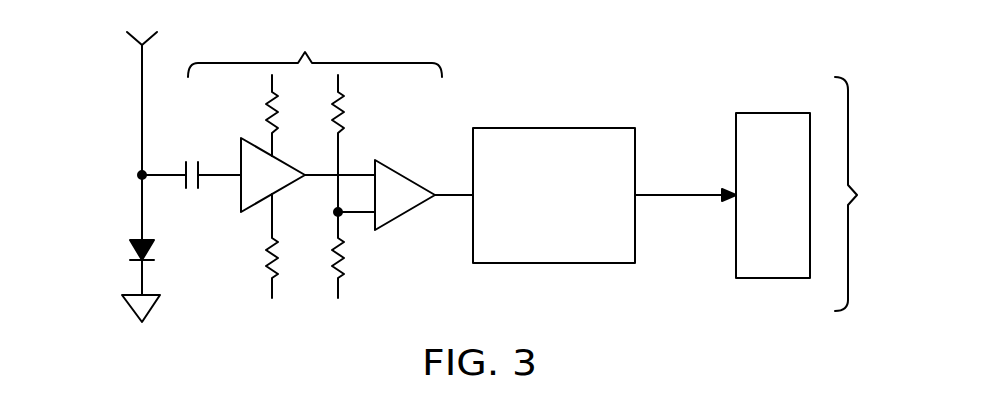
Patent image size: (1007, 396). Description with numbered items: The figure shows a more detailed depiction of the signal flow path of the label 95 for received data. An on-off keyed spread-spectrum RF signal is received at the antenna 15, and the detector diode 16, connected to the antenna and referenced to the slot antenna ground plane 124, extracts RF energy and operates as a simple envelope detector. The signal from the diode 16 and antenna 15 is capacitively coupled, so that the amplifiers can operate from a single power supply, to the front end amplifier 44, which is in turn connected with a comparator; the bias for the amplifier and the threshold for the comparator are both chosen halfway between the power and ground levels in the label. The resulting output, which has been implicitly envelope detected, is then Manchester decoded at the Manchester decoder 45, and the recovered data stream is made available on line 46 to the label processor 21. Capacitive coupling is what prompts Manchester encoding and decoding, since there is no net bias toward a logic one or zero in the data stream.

The antenna 15 is at (130, 43).
The detector diode 16 is at (128, 250).
The slot antenna ground plane 124 is at (130, 305).
The front end amplifier 44 is at (307, 159).
The Manchester decoder 45 is at (541, 128).
The line 46 is at (677, 198).
The processor 21 is at (770, 278).
The label 95 is at (866, 194).